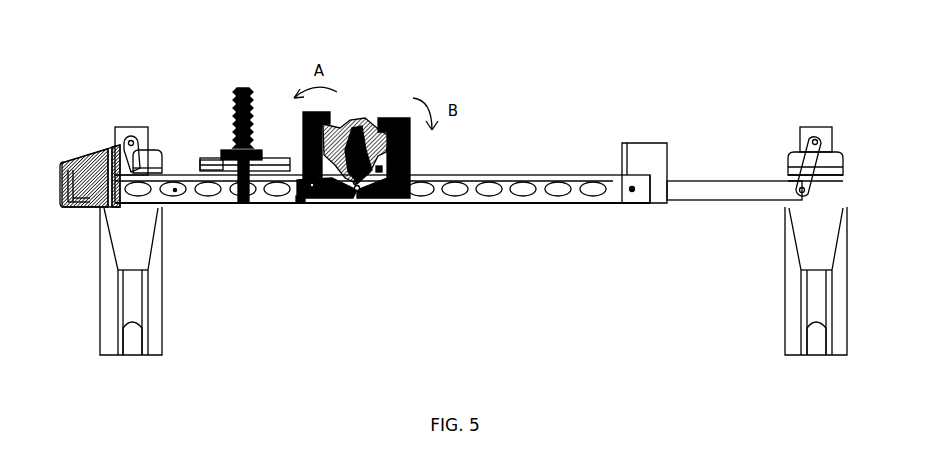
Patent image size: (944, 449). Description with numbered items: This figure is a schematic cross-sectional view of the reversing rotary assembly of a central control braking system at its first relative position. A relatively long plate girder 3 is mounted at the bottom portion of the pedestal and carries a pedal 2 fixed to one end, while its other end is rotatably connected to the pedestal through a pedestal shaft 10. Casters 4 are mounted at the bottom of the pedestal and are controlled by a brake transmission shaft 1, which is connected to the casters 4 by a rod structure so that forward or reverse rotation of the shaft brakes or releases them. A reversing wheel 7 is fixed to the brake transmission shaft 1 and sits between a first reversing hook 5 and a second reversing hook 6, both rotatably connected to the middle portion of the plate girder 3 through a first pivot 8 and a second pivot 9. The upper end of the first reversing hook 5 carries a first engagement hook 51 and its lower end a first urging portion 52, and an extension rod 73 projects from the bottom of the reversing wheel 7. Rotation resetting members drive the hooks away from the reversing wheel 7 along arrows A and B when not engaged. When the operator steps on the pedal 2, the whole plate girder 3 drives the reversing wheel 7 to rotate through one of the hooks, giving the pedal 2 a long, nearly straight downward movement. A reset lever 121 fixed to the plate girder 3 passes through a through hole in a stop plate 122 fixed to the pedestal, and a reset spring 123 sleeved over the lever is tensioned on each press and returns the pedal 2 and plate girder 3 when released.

The brake transmission shaft 1 is at (358, 140).
The pedal 2 is at (93, 162).
The plate girder 3 is at (505, 200).
The caster 4 is at (160, 293).
The first reversing hook 5 is at (300, 200).
The second reversing hook 6 is at (412, 120).
The reversing wheel 7 is at (372, 132).
The first pivot 8 is at (312, 200).
The second pivot 9 is at (388, 200).
The pedestal shaft 10 is at (634, 193).
The first engagement hook 51 is at (320, 120).
The first urging portion 52 is at (345, 192).
The extension rod 73 is at (350, 195).
The reset lever 121 is at (245, 203).
The stop plate 122 is at (270, 157).
The reset spring 123 is at (236, 124).